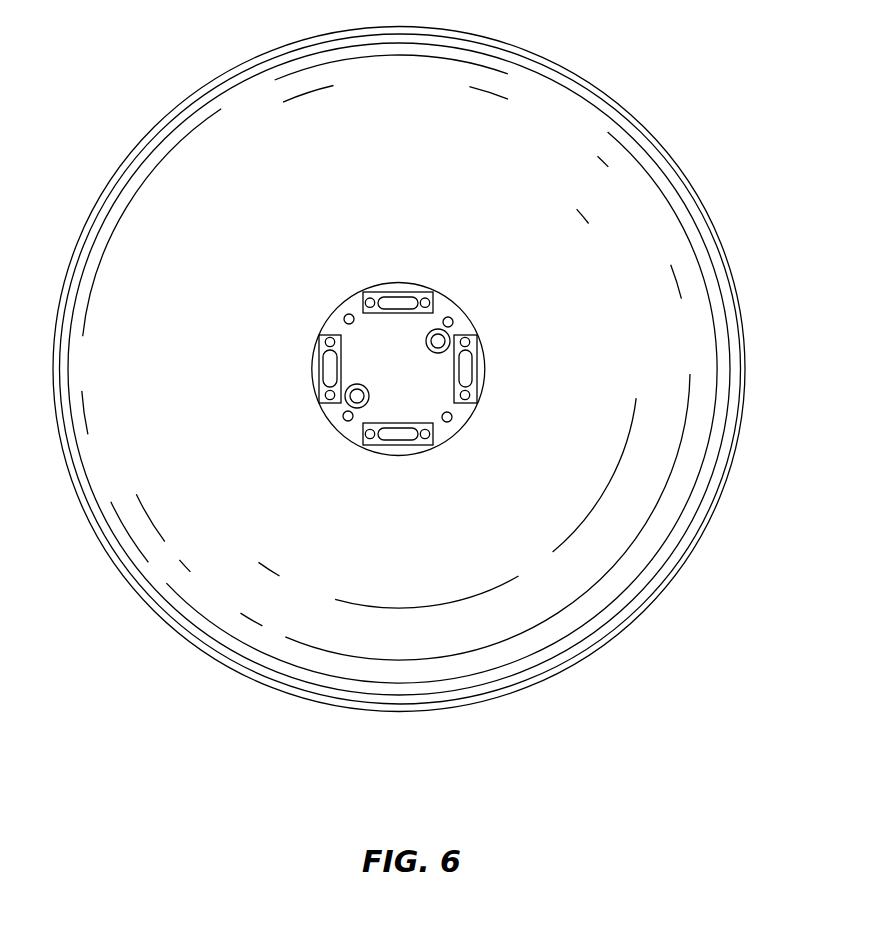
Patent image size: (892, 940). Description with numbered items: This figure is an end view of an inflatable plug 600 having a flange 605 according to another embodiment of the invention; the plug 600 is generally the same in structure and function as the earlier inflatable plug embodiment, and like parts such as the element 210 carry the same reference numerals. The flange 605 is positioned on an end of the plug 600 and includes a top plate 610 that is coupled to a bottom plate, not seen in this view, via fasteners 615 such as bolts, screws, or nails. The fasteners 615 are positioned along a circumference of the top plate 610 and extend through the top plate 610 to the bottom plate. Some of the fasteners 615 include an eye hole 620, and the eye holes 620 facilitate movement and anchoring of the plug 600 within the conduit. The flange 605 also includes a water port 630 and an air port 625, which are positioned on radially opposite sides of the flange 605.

The inflatable plug 600 is at (423, 362).
The wheel disc 210 is at (700, 266).
The flange 605 is at (388, 377).
The top plate 610 is at (333, 315).
The fasteners 615 is at (335, 323).
The eye hole 620 is at (468, 367).
The air port 625 is at (444, 339).
The water port 630 is at (360, 407).